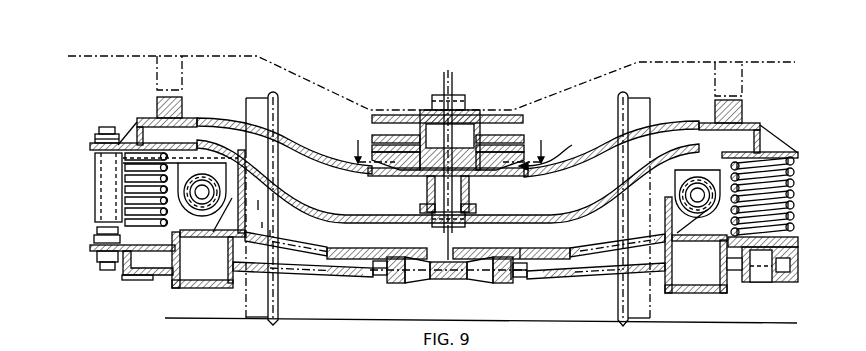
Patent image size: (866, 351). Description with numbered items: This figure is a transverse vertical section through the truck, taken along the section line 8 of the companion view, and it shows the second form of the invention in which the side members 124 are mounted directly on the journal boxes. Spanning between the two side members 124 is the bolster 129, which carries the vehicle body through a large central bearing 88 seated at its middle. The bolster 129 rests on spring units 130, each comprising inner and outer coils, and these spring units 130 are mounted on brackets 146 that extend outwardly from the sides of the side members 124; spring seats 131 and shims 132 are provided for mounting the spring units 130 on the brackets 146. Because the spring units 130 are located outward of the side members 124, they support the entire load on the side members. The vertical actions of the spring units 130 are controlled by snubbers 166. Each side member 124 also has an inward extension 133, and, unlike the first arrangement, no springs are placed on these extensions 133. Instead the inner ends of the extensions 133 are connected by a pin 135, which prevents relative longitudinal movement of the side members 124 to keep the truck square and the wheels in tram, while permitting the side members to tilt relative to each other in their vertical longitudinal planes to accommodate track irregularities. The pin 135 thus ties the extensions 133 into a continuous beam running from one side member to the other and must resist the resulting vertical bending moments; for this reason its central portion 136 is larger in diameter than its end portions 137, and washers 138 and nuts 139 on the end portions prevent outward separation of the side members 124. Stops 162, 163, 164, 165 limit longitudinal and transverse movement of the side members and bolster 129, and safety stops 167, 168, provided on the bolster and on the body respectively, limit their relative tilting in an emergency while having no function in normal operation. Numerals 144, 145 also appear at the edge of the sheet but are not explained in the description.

The section line 8 is at (449, 141).
The central bearing 88 is at (551, 149).
The side member 124 is at (198, 288).
The bolster 129 is at (448, 170).
The spring unit 130 is at (790, 182).
The spring seat 131 is at (798, 240).
The shim 132 is at (798, 253).
The inward extension 133 is at (332, 278).
The pin 135 is at (447, 283).
The central portion 136 is at (460, 257).
The end portion 137 is at (514, 278).
The washer 138 is at (528, 235).
The nut 139 is at (513, 274).
The bracket 144 is at (635, 346).
The bracket 145 is at (658, 340).
The bracket 146 is at (735, 282).
The stop 162 is at (258, 204).
The stop 163 is at (220, 218).
The stop 164 is at (270, 233).
The stop 165 is at (262, 225).
The snubber 166 is at (124, 203).
The safety stop 167 is at (157, 99).
The safety stop 168 is at (156, 73).